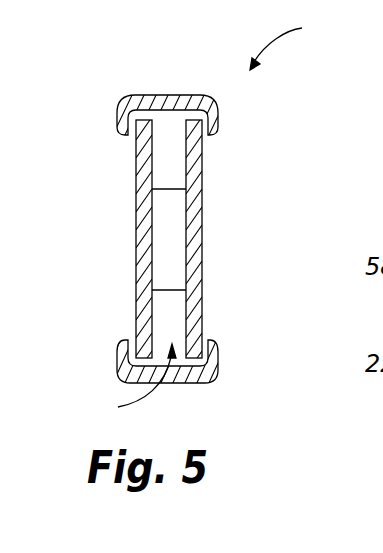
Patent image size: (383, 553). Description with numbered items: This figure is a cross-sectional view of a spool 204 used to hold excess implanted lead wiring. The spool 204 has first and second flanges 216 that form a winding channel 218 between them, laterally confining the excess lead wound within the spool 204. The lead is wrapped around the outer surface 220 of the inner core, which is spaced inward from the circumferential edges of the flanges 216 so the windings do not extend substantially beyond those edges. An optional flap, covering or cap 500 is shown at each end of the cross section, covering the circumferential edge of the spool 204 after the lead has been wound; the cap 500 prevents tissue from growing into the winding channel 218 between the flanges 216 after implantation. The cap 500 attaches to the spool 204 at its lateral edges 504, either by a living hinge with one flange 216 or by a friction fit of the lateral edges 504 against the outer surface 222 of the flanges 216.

The spool 204 is at (305, 44).
The flange 216 is at (136, 170).
The winding channel 218 is at (119, 387).
The outer surface of the inner core 220 is at (170, 188).
The outer surface of the flanges 222 is at (136, 274).
The cap 500 is at (138, 95).
The lateral edges of the cap 504 is at (128, 136).